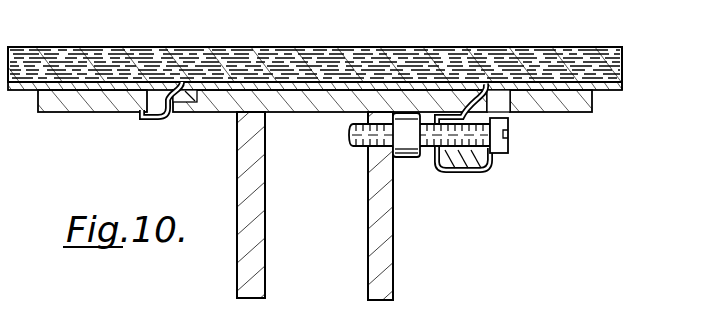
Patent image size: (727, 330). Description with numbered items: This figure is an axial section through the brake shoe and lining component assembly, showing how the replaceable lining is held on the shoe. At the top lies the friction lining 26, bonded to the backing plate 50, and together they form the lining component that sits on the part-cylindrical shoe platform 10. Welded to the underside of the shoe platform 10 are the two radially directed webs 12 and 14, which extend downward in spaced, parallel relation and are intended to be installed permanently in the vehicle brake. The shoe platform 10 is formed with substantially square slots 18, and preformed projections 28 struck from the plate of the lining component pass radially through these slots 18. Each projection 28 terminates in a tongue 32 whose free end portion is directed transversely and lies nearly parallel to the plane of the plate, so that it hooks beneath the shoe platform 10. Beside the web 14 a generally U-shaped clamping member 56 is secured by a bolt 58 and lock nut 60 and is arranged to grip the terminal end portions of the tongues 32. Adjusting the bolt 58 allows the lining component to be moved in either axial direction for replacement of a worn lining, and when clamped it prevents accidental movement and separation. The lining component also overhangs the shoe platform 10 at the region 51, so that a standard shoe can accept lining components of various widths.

The shoe platform 10 is at (77, 104).
The web 12 is at (240, 266).
The web 14 is at (383, 282).
The slots 18 is at (187, 111).
The friction lining 26 is at (33, 56).
The preformed projections 28 is at (170, 109).
The tongues 32 is at (144, 118).
The backing plate 50 is at (609, 91).
The overhang 51 is at (619, 63).
The U-shaped clamping member 56 is at (455, 167).
The bolt 58 is at (357, 147).
The lock nut 60 is at (405, 158).